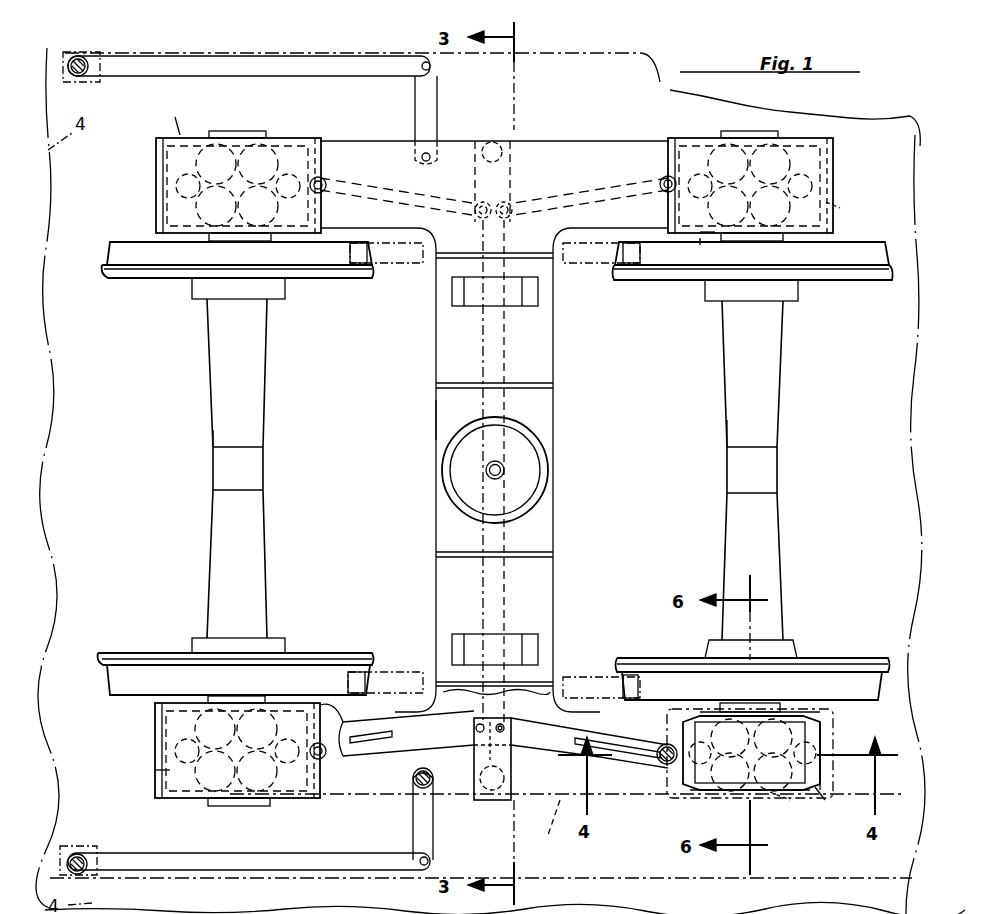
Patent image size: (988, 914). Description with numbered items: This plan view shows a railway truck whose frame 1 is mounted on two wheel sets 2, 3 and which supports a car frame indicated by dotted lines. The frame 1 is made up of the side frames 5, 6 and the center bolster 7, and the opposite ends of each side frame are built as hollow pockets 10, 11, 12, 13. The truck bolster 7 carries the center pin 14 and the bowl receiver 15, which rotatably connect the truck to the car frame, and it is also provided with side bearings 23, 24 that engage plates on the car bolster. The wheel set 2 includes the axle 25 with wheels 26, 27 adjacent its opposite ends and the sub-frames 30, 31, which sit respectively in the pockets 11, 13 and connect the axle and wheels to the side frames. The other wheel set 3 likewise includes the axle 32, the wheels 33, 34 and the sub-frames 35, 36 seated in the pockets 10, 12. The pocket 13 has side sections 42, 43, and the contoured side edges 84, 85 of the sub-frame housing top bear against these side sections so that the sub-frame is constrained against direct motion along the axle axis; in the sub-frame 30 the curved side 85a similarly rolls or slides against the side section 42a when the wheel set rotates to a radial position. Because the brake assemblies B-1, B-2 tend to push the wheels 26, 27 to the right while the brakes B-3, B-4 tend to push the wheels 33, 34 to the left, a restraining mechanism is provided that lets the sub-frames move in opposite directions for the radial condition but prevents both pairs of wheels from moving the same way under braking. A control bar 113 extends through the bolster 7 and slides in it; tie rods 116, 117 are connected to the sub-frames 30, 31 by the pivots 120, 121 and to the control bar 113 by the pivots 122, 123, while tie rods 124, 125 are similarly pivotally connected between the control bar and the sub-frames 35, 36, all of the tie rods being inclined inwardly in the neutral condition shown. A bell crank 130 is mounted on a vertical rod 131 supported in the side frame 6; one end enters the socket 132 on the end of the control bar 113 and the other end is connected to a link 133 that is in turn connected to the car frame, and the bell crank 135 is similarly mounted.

The frame 1 is at (436, 370).
The wheel set 2 is at (783, 424).
The wheel set 3 is at (207, 400).
The side frame 5 is at (380, 140).
The side frame 6 is at (551, 831).
The center bolster 7 is at (432, 418).
The pocket 10 is at (153, 178).
The pocket 11 is at (835, 183).
The pocket 12 is at (153, 733).
The pocket 13 is at (830, 740).
The center pin 14 is at (500, 470).
The bowl receiver 15 is at (442, 470).
The side bearing 23 is at (473, 640).
The side bearing 24 is at (475, 292).
The axle 25 is at (738, 388).
The wheel 26 is at (830, 262).
The wheel 27 is at (802, 680).
The sub-frame 30 is at (840, 208).
The sub-frame 31 is at (818, 800).
The axle 32 is at (228, 428).
The wheel 33 is at (180, 260).
The wheel 34 is at (180, 675).
The sub-frame 35 is at (180, 137).
The sub-frame 36 is at (166, 777).
The side section 42 is at (808, 715).
The side section 42a is at (705, 240).
The side section 43 is at (775, 800).
The contoured side edge 84 is at (700, 792).
The contoured side edge 85 is at (710, 715).
The curved side 85a is at (712, 235).
The control bar 113 is at (498, 356).
The tie rod 116 is at (555, 200).
The tie rod 117 is at (568, 742).
The pivot 120 is at (662, 180).
The pivot 121 is at (660, 762).
The pivot 122 is at (512, 200).
The pivot 123 is at (505, 733).
The tie rod 124 is at (410, 200).
The tie rod 125 is at (420, 722).
The bell crank 130 is at (413, 840).
The vertical rod 131 is at (413, 778).
The socket 132 is at (492, 800).
The link 133 is at (252, 860).
The bell crank 135 is at (438, 120).
The brake assembly B-1 is at (588, 268).
The brake assembly B-2 is at (610, 675).
The brake B-3 is at (380, 270).
The brake B-4 is at (378, 670).